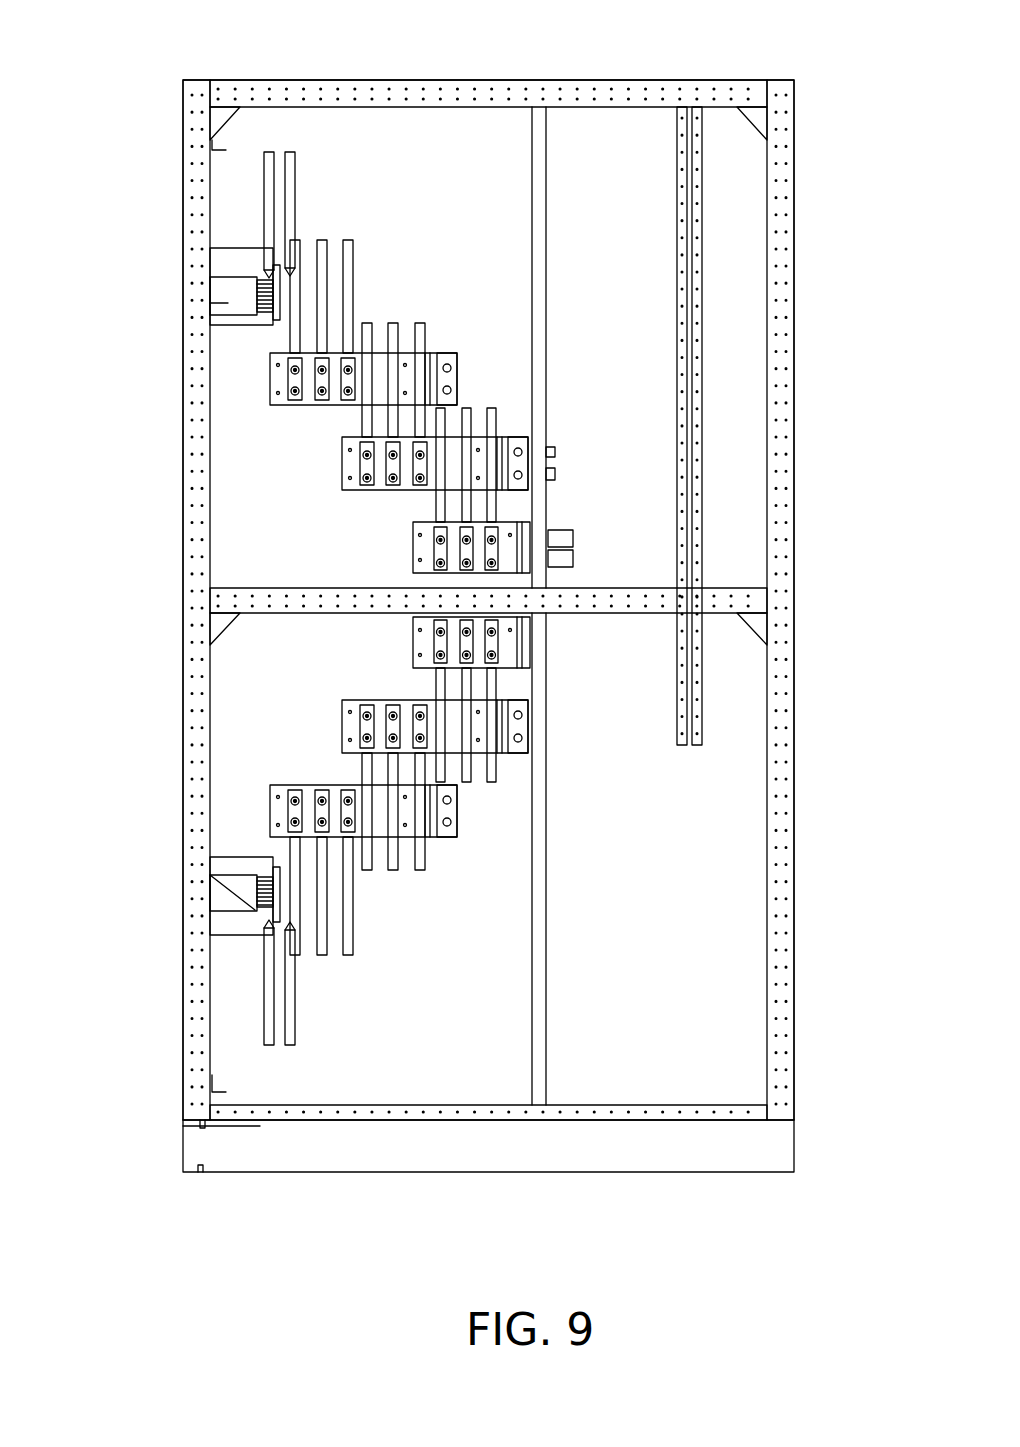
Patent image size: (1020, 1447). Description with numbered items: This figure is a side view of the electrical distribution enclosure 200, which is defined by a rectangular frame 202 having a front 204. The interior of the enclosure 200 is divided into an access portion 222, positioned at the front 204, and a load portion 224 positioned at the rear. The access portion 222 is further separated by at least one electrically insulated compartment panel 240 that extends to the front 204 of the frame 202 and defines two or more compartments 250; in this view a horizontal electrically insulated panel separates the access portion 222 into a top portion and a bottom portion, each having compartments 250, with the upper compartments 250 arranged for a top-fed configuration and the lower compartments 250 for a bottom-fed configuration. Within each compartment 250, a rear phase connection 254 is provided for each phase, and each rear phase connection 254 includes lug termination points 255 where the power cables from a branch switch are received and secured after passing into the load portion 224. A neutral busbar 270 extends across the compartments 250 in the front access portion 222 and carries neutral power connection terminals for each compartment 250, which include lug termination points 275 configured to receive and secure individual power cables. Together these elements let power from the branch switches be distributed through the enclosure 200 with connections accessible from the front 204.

The electrical distribution enclosure 200 is at (150, 68).
The rectangular frame 202 is at (633, 80).
The front 204 is at (160, 418).
The access portion 222 is at (486, 206).
The load portion 224 is at (644, 206).
The electrically insulated compartment panel 240 is at (370, 135).
The compartment 250 is at (283, 551).
The rear phase connection 254 is at (457, 378).
The lug termination points 255 is at (433, 365).
The neutral busbar 270 is at (228, 290).
The lug termination points 275 is at (265, 191).